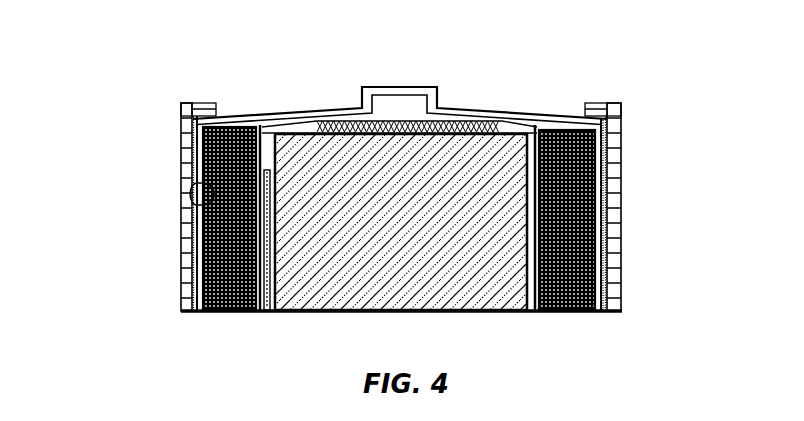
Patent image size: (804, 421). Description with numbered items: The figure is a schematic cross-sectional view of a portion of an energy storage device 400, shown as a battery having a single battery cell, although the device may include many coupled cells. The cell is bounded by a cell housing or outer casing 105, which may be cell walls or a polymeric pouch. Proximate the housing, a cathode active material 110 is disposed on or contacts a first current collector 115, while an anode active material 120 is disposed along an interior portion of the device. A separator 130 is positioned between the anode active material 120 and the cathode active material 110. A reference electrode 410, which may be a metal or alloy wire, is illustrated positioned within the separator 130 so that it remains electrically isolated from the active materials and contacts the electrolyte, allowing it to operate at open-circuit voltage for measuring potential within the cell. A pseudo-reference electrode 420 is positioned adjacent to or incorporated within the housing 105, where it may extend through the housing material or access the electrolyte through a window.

The energy storage device 400 is at (122, 80).
The cell housing 105 is at (180, 230).
The cathode active material 110 is at (615, 297).
The first current collector 115 is at (617, 242).
The anode active material 120 is at (280, 130).
The separator 130 is at (510, 130).
The reference electrode 410 is at (270, 311).
The pseudo-reference electrode 420 is at (190, 202).